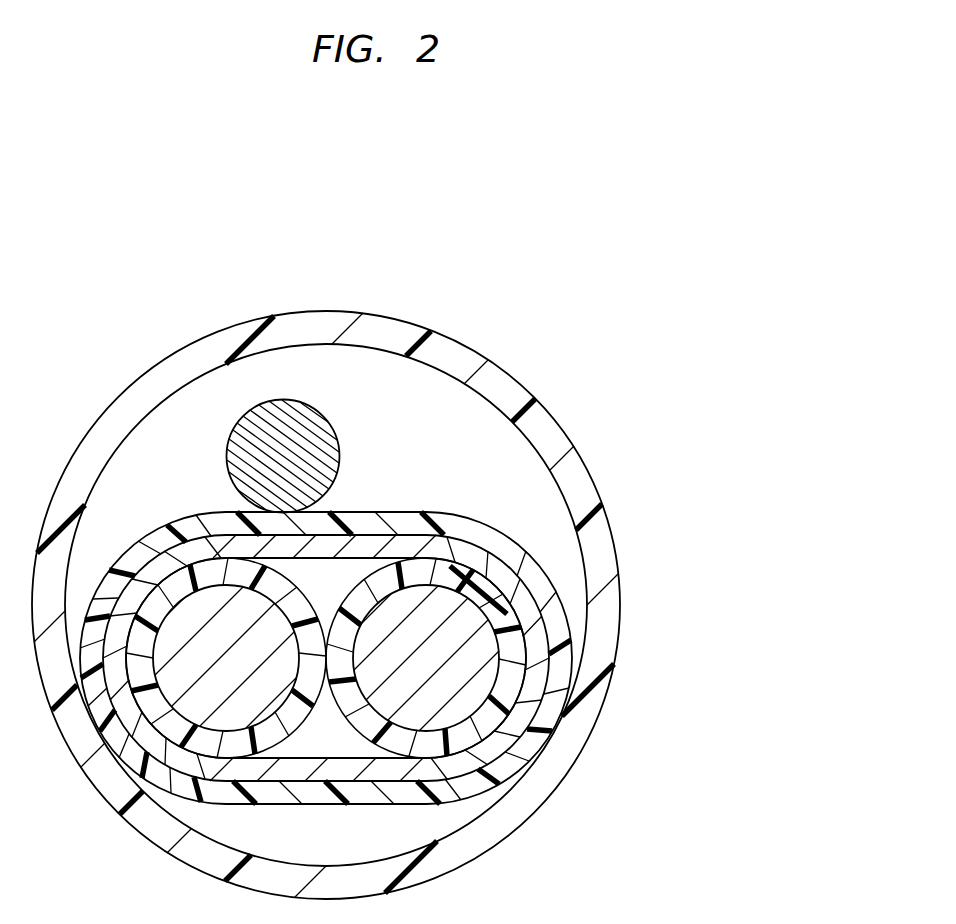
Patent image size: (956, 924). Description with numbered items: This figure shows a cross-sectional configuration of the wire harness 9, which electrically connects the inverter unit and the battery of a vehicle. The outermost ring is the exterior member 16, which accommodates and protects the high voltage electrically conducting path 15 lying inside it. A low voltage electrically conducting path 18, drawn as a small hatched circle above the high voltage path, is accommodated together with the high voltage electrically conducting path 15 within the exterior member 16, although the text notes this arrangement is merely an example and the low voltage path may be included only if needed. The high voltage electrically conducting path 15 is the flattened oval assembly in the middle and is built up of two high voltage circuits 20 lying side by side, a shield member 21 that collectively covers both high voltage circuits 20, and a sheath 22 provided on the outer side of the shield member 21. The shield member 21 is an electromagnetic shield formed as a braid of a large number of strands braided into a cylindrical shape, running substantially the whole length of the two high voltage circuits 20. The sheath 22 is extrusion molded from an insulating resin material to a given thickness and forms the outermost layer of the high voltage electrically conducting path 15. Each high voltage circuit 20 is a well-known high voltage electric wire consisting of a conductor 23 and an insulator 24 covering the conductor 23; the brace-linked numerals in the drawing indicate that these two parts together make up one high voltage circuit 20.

The wire harness 9 is at (600, 244).
The high voltage electrically conducting path 15 is at (475, 513).
The exterior member 16 is at (528, 386).
The low voltage electrically conducting path 18 is at (283, 398).
The high voltage circuit 20 is at (75, 253).
The shield member 21 is at (370, 545).
The sheath 22 is at (398, 517).
The conductor 23 is at (190, 620).
The insulator 24 is at (212, 570).